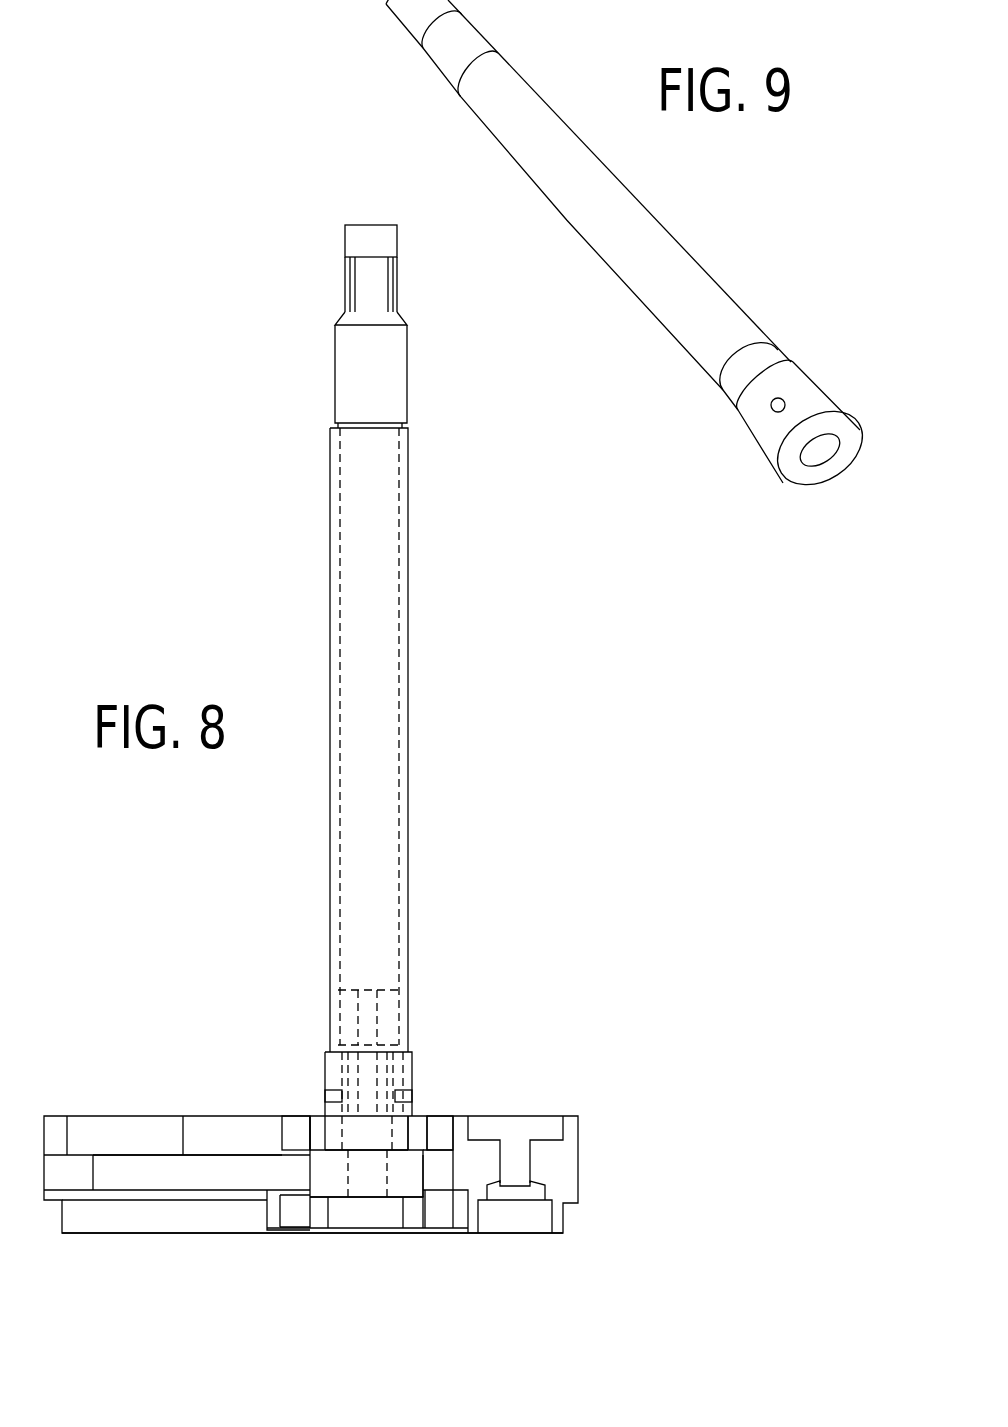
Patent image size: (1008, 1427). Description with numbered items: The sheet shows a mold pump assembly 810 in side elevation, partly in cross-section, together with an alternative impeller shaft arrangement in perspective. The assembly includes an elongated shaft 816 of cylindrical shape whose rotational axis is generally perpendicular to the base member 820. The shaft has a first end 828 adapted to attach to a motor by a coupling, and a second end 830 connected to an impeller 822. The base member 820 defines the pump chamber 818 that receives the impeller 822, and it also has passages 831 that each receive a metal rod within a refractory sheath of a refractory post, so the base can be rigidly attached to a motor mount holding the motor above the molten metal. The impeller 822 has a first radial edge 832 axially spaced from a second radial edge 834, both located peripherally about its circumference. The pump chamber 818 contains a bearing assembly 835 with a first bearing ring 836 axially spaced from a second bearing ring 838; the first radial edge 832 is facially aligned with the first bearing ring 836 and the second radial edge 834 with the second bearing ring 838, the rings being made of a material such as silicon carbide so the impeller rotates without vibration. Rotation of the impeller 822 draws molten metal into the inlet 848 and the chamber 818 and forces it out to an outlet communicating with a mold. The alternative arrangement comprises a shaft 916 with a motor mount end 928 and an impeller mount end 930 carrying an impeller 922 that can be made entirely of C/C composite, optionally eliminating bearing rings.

In FIG. 8, the mold pump assembly 810 is at (269, 638).
In FIG. 8, the elongated shaft 816 is at (330, 630).
In FIG. 8, the pump chamber 818 is at (181, 1172).
In FIG. 8, the base member 820 is at (228, 1127).
In FIG. 8, the impeller 822 is at (410, 1113).
In FIG. 8, the first end 828 is at (342, 268).
In FIG. 8, the second end 830 is at (322, 1005).
In FIG. 8, the passage 831 is at (517, 1127).
In FIG. 8, the first radial edge 832 is at (318, 1117).
In FIG. 8, the second radial edge 834 is at (318, 1200).
In FIG. 8, the bearing assembly 835 is at (433, 1098).
In FIG. 8, the first bearing ring 836 is at (297, 1117).
In FIG. 8, the second bearing ring 838 is at (298, 1210).
In FIG. 8, the inlet 848 is at (365, 1238).
In FIG. 9, the shaft 916 is at (538, 195).
In FIG. 9, the impeller 922 is at (760, 393).
In FIG. 9, the motor mount end 928 is at (400, 32).
In FIG. 9, the impeller mount end 930 is at (824, 373).